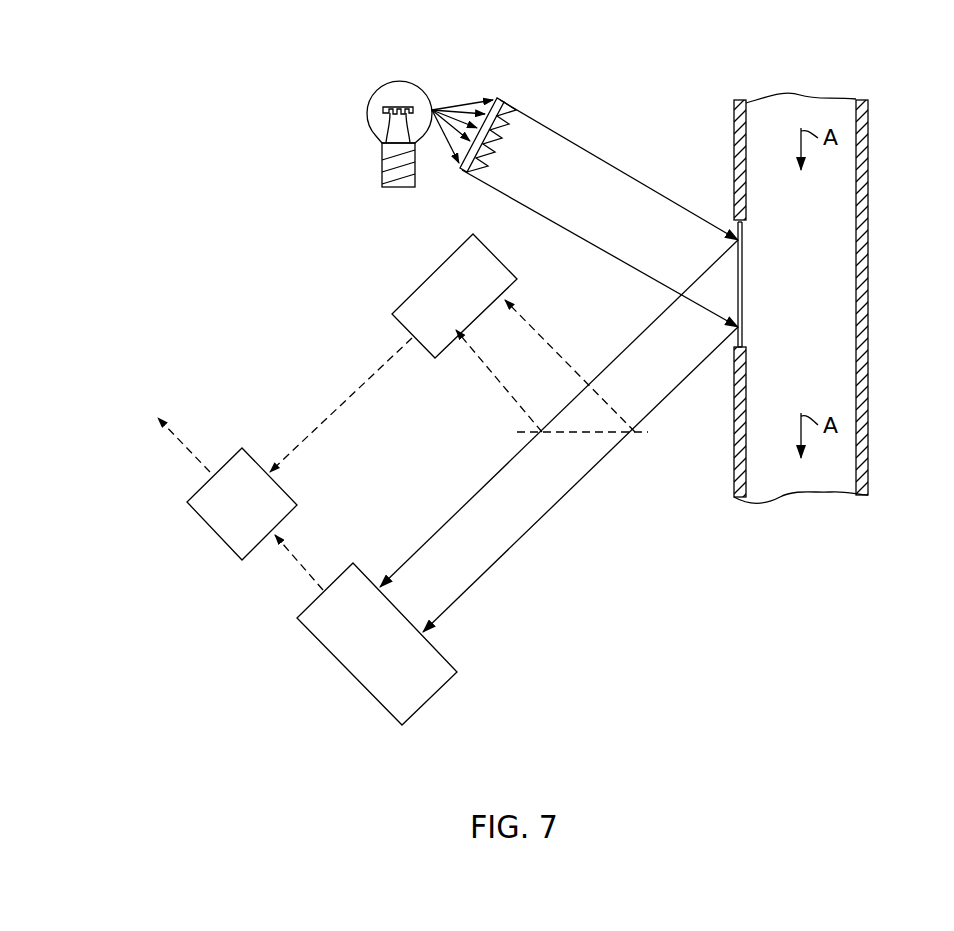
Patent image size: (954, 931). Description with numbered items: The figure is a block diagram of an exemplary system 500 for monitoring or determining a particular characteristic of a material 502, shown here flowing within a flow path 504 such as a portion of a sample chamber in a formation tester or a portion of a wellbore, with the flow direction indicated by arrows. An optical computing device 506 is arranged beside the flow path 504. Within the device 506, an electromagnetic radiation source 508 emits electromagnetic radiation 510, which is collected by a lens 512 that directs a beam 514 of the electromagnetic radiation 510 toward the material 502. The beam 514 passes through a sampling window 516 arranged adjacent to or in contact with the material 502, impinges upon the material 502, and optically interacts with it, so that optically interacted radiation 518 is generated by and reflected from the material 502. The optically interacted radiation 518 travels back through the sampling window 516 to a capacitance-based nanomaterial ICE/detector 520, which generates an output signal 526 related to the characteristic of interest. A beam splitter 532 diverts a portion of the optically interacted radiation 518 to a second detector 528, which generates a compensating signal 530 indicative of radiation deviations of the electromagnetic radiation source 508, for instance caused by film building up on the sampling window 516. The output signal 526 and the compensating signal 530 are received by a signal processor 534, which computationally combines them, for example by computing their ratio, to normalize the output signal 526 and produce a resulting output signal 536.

The system 500 is at (698, 108).
The material 502 is at (785, 304).
The flow path 504 is at (868, 150).
The optical computing device 506 is at (288, 262).
The electromagnetic radiation source 508 is at (368, 100).
The electromagnetic radiation 510 is at (462, 100).
The lens 512 is at (505, 100).
The beam 514 is at (580, 147).
The sampling window 516 is at (746, 228).
The optically interacted radiation 518 is at (518, 540).
The capacitance-based nanomaterial ICE/detector 520 is at (447, 675).
The output signal 526 is at (300, 567).
The second detector 528 is at (445, 268).
The compensating signal 530 is at (340, 395).
The beam splitter 532 is at (560, 435).
The signal processor 534 is at (207, 522).
The resulting output signal 536 is at (190, 450).